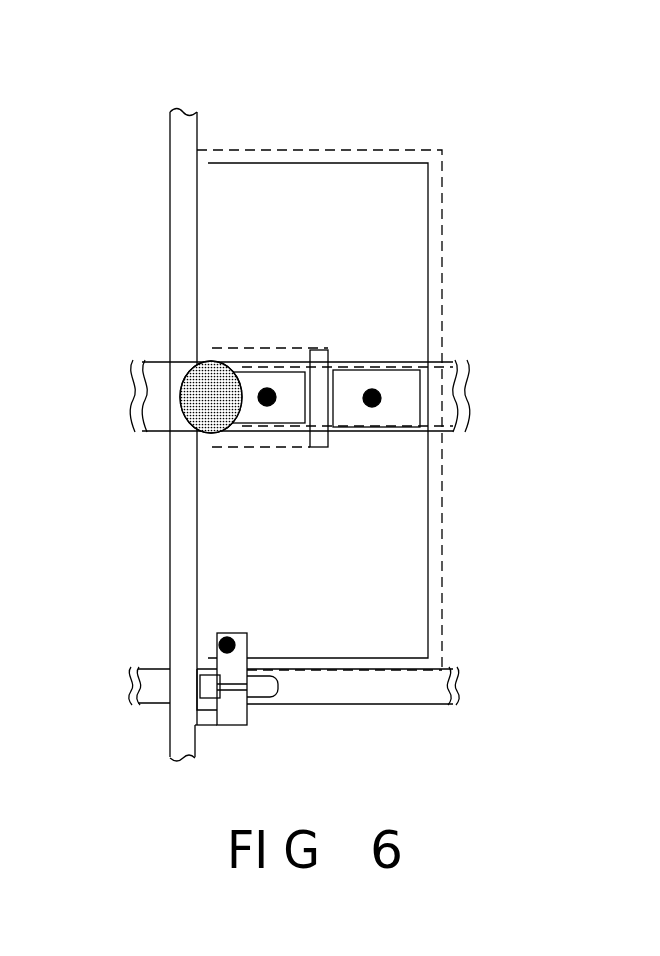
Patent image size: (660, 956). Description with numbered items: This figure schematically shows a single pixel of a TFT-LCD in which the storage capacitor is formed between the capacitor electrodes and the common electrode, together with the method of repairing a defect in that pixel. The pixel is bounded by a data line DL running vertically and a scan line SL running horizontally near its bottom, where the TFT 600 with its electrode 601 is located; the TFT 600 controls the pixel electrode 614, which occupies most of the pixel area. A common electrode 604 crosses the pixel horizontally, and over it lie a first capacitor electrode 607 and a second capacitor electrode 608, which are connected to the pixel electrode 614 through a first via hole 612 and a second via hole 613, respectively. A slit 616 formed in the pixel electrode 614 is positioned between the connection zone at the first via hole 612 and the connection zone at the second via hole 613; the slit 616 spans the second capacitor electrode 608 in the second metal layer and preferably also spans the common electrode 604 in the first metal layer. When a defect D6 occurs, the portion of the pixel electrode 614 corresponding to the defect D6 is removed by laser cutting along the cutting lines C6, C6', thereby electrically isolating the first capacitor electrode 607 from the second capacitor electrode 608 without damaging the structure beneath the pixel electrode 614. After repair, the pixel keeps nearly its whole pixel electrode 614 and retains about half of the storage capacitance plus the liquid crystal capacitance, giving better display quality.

The pixel electrode 614 is at (403, 175).
The first via hole 612 is at (270, 388).
The first capacitor electrode 607 is at (288, 383).
The second via hole 613 is at (375, 393).
The second capacitor electrode 608 is at (403, 392).
The common electrode 604 is at (455, 432).
The slit 616 is at (320, 440).
The TFT 600 is at (250, 688).
The gate electrode 601 is at (273, 685).
The data line DL is at (182, 110).
The scan line SL is at (138, 680).
The defect D6 is at (193, 382).
The cutting line C6 is at (234, 469).
The cutting line C6' is at (236, 322).